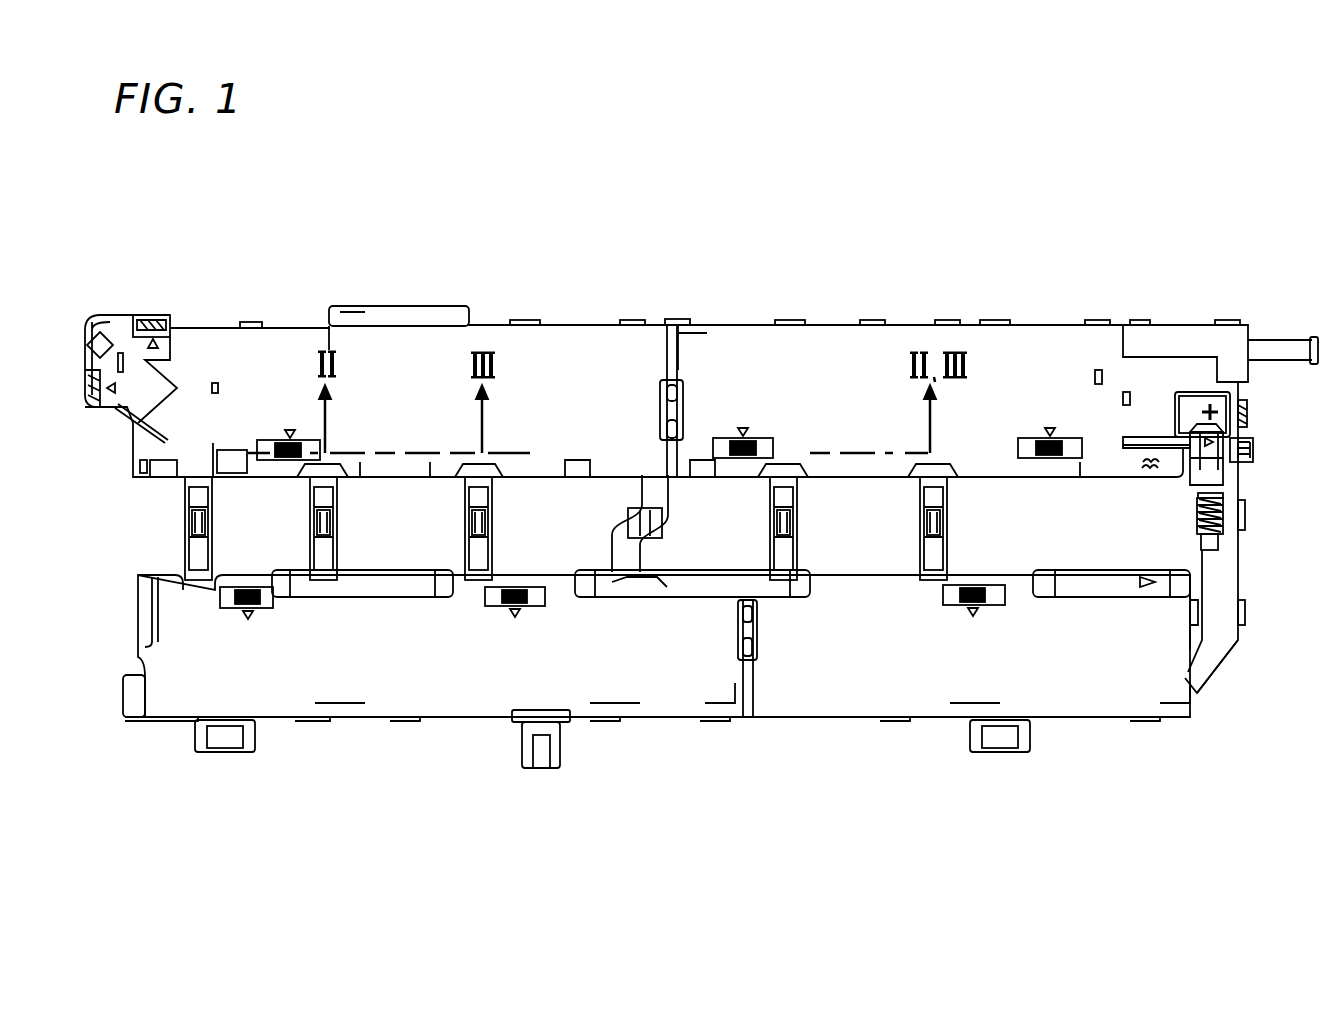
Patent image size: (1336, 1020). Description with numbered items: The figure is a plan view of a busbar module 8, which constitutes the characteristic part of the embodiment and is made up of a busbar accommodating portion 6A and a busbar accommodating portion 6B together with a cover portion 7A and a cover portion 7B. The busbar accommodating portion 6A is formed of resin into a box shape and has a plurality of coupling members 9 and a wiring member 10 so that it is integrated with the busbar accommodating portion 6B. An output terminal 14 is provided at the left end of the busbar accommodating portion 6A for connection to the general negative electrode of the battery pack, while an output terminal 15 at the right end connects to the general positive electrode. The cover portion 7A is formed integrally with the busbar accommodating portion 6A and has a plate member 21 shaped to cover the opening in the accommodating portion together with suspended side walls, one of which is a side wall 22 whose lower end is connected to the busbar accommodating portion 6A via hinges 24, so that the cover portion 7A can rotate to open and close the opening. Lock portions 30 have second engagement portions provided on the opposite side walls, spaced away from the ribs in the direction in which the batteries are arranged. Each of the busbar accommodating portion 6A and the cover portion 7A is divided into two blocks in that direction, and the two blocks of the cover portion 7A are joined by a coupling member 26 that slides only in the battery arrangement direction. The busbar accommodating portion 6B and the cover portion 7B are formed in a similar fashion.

The busbar module 8 is at (1180, 270).
The output terminal 14 is at (110, 323).
The hinges 24 is at (249, 322).
The side wall 22 is at (297, 323).
The cover portion 7A is at (572, 323).
The plate member 21 is at (631, 323).
The coupling member 26 is at (685, 402).
The lock portions 30 is at (285, 432).
The busbar accommodating portion 6A is at (1249, 391).
The coupling members 9 is at (212, 526).
The output terminal 15 is at (1222, 543).
The wiring member 10 is at (1230, 570).
The busbar accommodating portion 6B is at (1232, 667).
The cover portion 7B is at (467, 688).